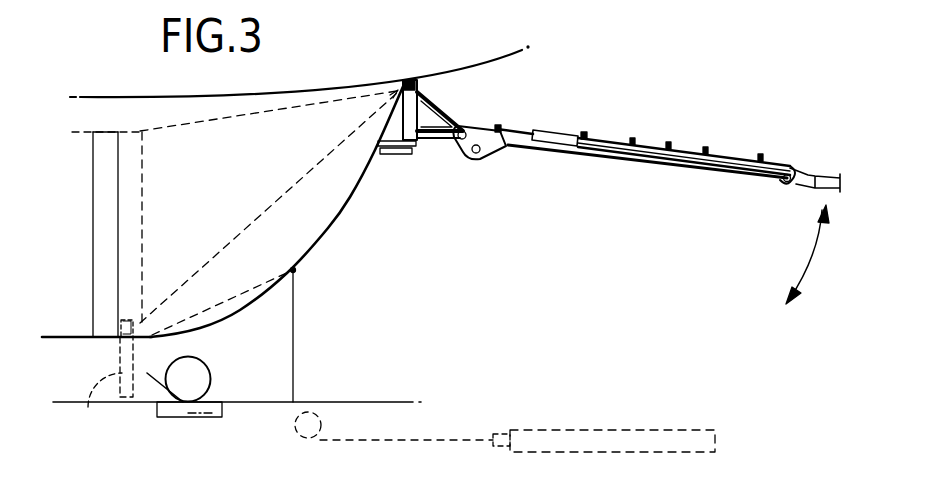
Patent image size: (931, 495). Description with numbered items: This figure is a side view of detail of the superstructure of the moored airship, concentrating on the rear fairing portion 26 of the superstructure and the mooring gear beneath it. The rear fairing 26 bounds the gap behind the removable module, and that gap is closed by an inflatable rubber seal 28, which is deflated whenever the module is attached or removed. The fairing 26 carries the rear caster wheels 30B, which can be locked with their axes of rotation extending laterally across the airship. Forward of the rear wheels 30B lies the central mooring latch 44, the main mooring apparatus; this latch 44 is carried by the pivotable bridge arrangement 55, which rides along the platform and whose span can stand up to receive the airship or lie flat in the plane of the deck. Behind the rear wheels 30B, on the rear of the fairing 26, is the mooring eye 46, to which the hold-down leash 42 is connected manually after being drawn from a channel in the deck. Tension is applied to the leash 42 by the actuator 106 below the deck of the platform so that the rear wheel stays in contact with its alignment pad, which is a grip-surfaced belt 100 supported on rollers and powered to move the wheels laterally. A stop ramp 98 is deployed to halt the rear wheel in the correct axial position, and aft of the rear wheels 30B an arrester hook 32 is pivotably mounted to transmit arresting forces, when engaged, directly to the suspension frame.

The rear fairing portion 26 is at (330, 231).
The inflatable rubber seal 28 is at (106, 329).
The rear caster wheels 30B is at (205, 376).
The arrester hook 32 is at (733, 174).
The hold-down leash 42 is at (294, 336).
The central mooring latch 44 is at (120, 318).
The mooring eye 46 is at (295, 270).
The pivotable bridge arrangement 55 is at (85, 411).
The stop ramp 98 is at (150, 378).
The grip-surfaced belts 100 is at (217, 418).
The actuator 106 is at (700, 447).